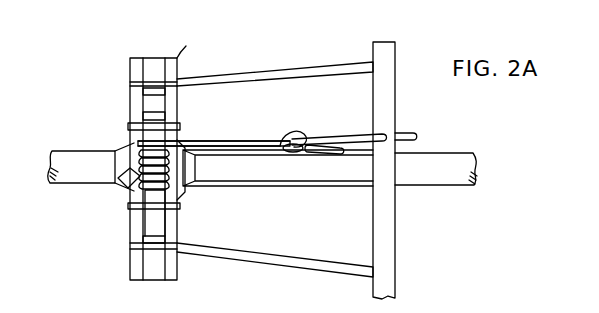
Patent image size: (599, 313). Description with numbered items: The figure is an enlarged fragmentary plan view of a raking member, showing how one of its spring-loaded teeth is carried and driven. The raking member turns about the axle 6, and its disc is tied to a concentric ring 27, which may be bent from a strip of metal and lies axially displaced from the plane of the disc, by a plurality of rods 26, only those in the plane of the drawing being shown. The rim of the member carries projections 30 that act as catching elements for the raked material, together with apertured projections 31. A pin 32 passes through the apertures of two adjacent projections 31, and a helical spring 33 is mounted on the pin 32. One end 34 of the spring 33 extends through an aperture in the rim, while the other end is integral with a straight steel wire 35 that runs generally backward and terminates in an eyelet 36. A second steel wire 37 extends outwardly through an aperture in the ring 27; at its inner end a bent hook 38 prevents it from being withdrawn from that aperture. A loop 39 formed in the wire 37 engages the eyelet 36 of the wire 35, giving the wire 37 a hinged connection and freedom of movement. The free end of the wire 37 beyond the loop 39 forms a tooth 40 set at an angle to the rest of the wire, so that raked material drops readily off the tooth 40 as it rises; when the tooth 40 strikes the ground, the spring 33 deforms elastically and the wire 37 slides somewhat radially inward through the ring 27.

The axle 6 is at (62, 165).
The rods 26 is at (271, 73).
The ring 27 is at (384, 82).
The projections 30 is at (130, 184).
The apertured projections 31 is at (168, 125).
The pin 32 is at (150, 135).
The helical spring 33 is at (144, 150).
The end of helical spring 34 is at (160, 190).
The straight steel wire 35 is at (240, 143).
The eyelet 36 is at (300, 134).
The steel wire 37 is at (341, 137).
The bent hook 38 is at (404, 135).
The loop 39 is at (289, 147).
The tooth 40 is at (326, 148).